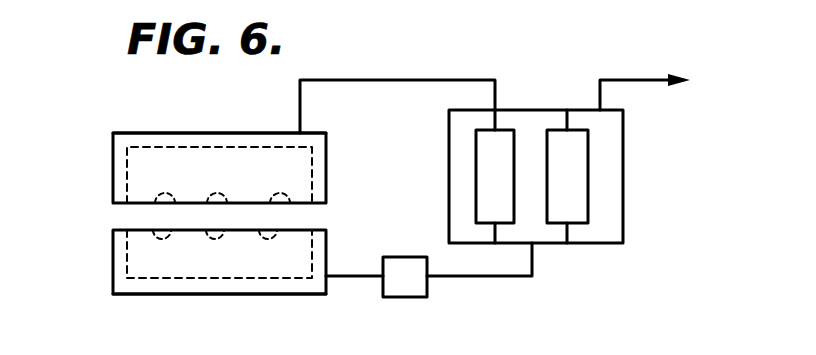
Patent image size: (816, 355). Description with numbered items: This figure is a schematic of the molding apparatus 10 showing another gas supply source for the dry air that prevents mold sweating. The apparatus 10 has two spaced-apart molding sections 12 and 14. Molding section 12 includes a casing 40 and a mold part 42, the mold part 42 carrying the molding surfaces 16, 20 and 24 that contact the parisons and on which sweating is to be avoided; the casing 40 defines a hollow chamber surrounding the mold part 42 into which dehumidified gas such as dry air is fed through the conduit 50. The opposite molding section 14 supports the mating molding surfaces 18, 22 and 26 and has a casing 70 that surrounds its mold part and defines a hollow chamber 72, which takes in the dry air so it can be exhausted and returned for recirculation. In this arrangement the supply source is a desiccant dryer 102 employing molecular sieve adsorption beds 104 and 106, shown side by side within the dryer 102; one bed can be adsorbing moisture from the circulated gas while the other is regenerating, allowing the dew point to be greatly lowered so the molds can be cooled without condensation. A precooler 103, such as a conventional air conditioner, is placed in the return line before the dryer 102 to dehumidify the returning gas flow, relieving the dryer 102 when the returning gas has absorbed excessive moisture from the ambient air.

The molding apparatus 10 is at (97, 118).
The molding section 12 is at (108, 175).
The molding section 14 is at (108, 262).
The molding surface 16 is at (186, 187).
The molding surface 18 is at (160, 242).
The mold surface 20 is at (238, 198).
The mold surface 22 is at (211, 242).
The mold surface 24 is at (290, 195).
The mold surface 26 is at (266, 242).
The casing 40 is at (186, 133).
The mold part 42 is at (259, 147).
The conduit 50 is at (436, 80).
The casing 70 is at (170, 295).
The hollow chamber 72 is at (250, 280).
The desiccant dryer 102 is at (623, 140).
The precooler 103 is at (413, 226).
The molecular sieve adsorption bed 104 is at (476, 163).
The molecular sieve adsorption bed 106 is at (578, 183).